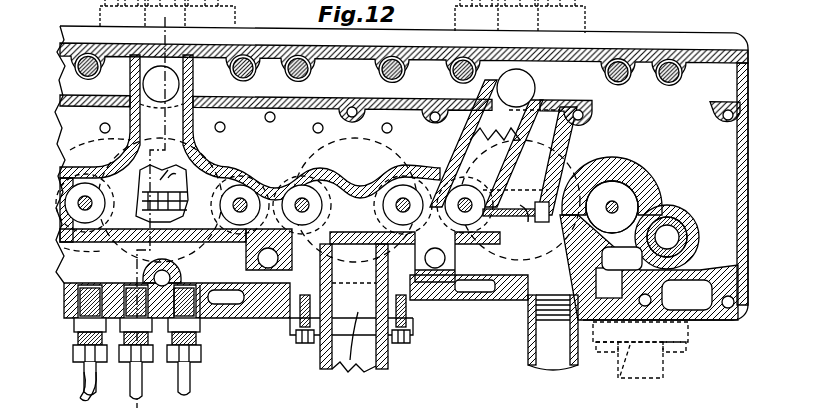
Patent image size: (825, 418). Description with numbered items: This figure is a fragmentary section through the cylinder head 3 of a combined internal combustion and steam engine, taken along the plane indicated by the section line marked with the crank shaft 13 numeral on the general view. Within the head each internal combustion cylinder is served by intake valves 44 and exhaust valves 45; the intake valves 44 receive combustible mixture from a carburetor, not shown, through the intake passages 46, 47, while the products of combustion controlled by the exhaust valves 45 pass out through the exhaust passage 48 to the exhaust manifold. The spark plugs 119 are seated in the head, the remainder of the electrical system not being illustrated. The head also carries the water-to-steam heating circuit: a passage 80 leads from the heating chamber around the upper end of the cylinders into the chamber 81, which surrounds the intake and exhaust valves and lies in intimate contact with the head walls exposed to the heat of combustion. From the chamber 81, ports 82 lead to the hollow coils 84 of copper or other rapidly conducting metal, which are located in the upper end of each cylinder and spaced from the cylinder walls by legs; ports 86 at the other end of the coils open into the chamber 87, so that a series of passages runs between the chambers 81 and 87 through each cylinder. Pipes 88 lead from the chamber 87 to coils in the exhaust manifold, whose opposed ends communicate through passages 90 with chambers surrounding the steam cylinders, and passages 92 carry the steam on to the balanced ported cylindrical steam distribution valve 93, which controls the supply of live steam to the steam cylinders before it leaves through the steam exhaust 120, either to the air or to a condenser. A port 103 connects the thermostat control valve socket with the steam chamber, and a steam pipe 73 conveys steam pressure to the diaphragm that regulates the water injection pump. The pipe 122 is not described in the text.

The cylinder head 3 is at (748, 182).
The crank shaft 13 is at (170, 17).
The intake valves 44 is at (76, 204).
The exhaust valves 45 is at (312, 210).
The intake passage 46 is at (503, 142).
The intake passage 47 is at (161, 87).
The exhaust passage 48 is at (354, 317).
The steam pipe 73 is at (82, 377).
The passage 80 is at (101, 125).
The chamber 81 is at (68, 160).
The ports 82 is at (540, 200).
The hollow coils 84 is at (62, 266).
The ports 86 is at (170, 238).
The chamber 87 is at (208, 290).
The pipes 88 is at (130, 396).
The passages 90 is at (622, 360).
The passages 92 is at (652, 297).
The steam distribution valve 93 is at (688, 232).
The port 103 is at (351, 354).
The spark plugs 119 is at (612, 200).
The steam exhaust 120 is at (605, 222).
The outlet pipe 122 is at (556, 340).